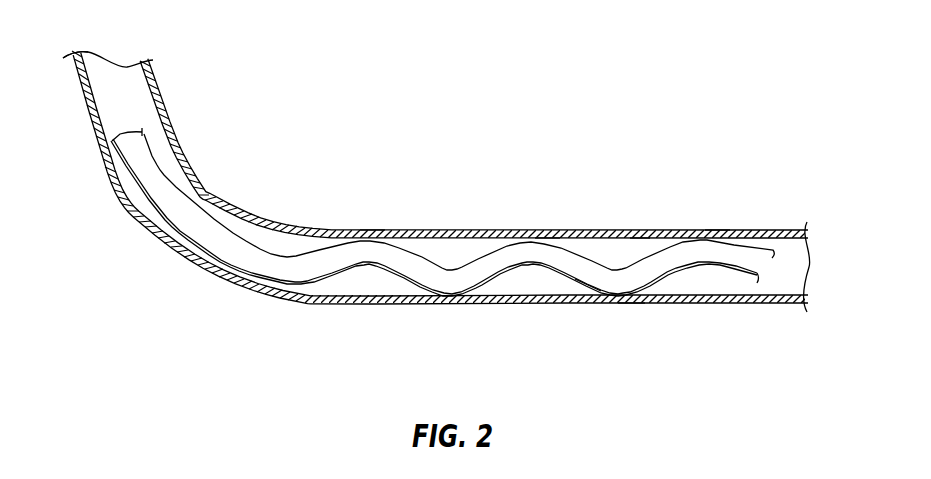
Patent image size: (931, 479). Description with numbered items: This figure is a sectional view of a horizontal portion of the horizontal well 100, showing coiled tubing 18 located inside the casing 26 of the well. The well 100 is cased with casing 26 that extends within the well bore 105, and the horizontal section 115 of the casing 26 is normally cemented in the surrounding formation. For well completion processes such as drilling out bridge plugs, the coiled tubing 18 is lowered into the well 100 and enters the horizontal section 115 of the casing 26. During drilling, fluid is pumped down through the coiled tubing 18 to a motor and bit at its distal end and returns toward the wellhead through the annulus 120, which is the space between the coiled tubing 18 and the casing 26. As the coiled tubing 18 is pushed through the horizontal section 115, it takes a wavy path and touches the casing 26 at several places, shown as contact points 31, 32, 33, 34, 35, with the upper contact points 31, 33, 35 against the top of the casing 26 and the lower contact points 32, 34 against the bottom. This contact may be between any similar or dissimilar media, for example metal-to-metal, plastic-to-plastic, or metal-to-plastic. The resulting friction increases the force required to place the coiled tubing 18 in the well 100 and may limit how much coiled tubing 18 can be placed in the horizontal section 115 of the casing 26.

The horizontal well 100 is at (634, 96).
The horizontal section 115 is at (641, 200).
The well bore 105 is at (412, 232).
The contact point 31 is at (372, 231).
The contact point 33 is at (547, 241).
The contact point 35 is at (718, 232).
The contact point 32 is at (451, 301).
The contact point 34 is at (631, 301).
The casing 26 is at (476, 232).
The annulus 120 is at (545, 281).
The coiled tubing 18 is at (591, 288).